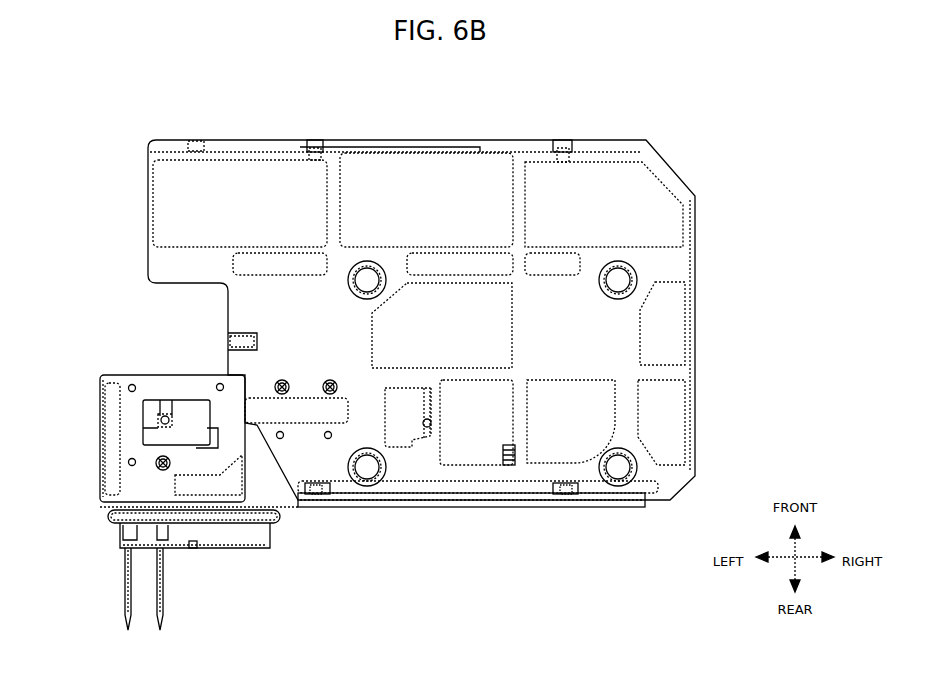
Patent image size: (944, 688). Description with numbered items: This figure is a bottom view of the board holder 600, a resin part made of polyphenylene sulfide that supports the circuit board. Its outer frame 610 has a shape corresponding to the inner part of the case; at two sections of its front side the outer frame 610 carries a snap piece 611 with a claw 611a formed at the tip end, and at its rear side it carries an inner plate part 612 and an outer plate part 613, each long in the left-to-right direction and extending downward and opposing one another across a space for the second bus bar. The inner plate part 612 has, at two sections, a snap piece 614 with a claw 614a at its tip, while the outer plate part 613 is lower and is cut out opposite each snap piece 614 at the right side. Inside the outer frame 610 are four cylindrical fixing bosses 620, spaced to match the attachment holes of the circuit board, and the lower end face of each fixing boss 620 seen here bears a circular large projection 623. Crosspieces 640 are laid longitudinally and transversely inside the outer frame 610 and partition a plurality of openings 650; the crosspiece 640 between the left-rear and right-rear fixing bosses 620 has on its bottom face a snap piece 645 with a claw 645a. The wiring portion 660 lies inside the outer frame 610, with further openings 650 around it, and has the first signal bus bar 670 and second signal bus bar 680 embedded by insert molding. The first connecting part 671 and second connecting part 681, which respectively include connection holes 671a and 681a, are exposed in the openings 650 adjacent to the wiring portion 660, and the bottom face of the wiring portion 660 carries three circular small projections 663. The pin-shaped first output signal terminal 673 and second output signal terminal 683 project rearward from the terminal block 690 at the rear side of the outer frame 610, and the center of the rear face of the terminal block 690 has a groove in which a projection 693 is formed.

The board holder 600 is at (730, 165).
The outer frame 610 is at (440, 141).
The snap piece 611 is at (318, 140).
The claw 611a is at (315, 162).
The inner plate part 612 is at (460, 488).
The outer plate part 613 is at (490, 502).
The snap piece 614 is at (305, 494).
The claw 614a is at (322, 494).
The fixing boss 620 is at (370, 260).
The large projection 623 is at (628, 283).
The crosspiece 640 is at (262, 248).
The snap piece 645 is at (512, 440).
The claw 645a is at (503, 453).
The opening 650 is at (240, 178).
The wiring portion 660 is at (128, 418).
The small projection 663 is at (329, 380).
The first signal bus bar 670 is at (162, 550).
The first connecting part 671 is at (423, 448).
The connection hole 671a is at (431, 420).
The first output signal terminal 673 is at (163, 612).
The second signal bus bar 680 is at (126, 550).
The second connecting part 681 is at (164, 416).
The connection hole 681a is at (169, 416).
The second output signal terminal 683 is at (126, 612).
The terminal block 690 is at (252, 548).
The projection 693 is at (196, 548).